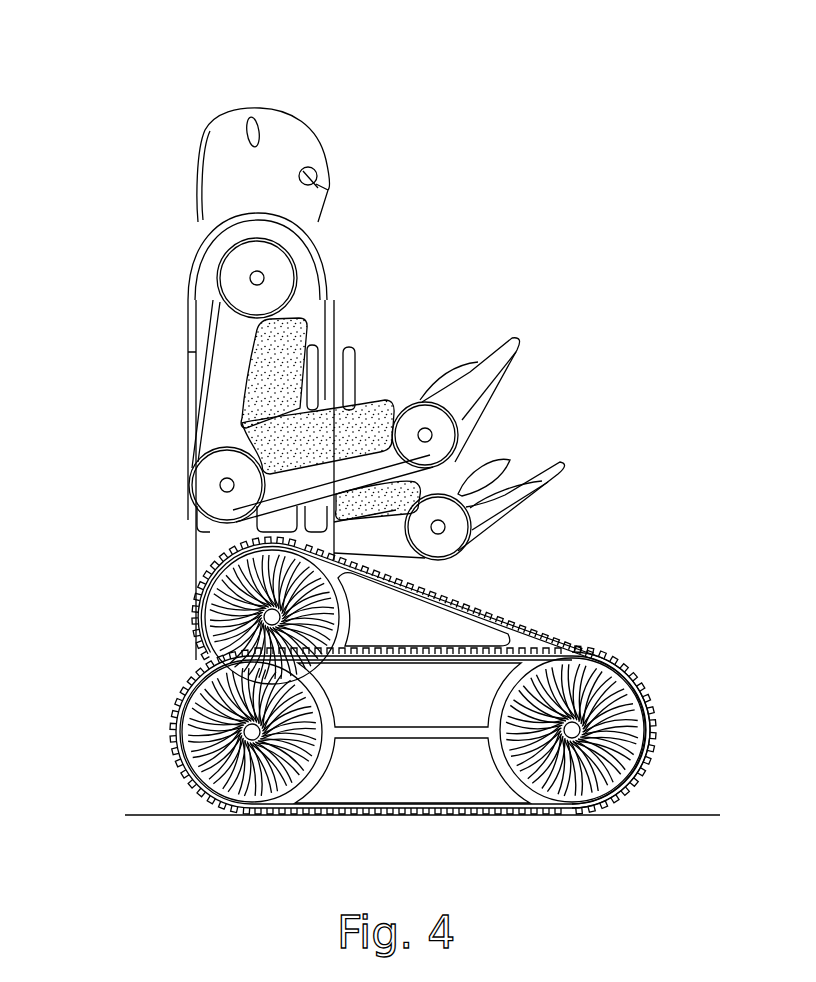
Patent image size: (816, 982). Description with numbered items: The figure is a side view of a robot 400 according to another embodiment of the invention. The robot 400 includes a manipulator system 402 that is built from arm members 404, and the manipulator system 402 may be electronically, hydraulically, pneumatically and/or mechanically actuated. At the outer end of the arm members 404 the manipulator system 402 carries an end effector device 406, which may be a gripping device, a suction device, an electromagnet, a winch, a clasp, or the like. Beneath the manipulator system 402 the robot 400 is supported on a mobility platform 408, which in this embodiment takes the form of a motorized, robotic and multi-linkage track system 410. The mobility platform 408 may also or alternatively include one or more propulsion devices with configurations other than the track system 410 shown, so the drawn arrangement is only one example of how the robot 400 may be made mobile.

The robot 400 is at (148, 104).
The manipulator system 402 is at (184, 409).
The arm member 404 is at (333, 372).
The end effector device 406 is at (533, 473).
The mobility platform 408 is at (494, 606).
The track system 410 is at (537, 636).